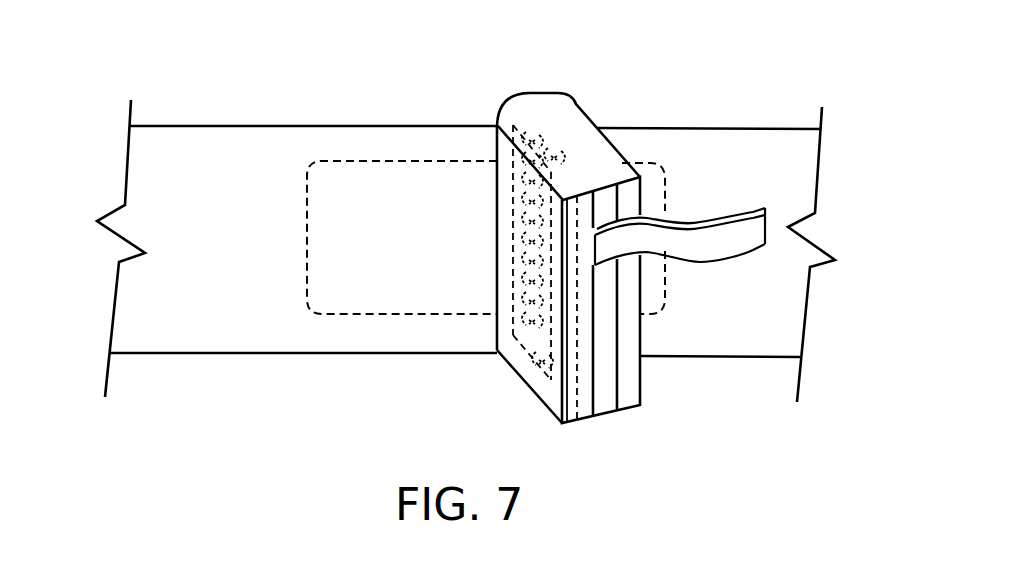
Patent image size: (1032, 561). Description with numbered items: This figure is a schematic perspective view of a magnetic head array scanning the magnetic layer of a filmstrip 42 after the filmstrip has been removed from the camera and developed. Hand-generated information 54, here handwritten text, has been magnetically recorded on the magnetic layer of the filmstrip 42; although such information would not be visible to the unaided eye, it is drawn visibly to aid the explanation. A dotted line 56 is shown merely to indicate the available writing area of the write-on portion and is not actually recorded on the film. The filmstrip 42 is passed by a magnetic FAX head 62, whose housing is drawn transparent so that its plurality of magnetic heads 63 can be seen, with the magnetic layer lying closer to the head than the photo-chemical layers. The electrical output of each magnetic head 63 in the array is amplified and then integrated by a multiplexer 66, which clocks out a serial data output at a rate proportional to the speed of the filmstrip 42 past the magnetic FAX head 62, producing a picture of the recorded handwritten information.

The filmstrip 42 is at (777, 131).
The hand-generated information 54 is at (369, 183).
The dotted line 56 is at (308, 211).
The magnetic FAX head 62 is at (567, 105).
The magnetic heads 63 is at (497, 348).
The multiplexer 66 is at (533, 397).